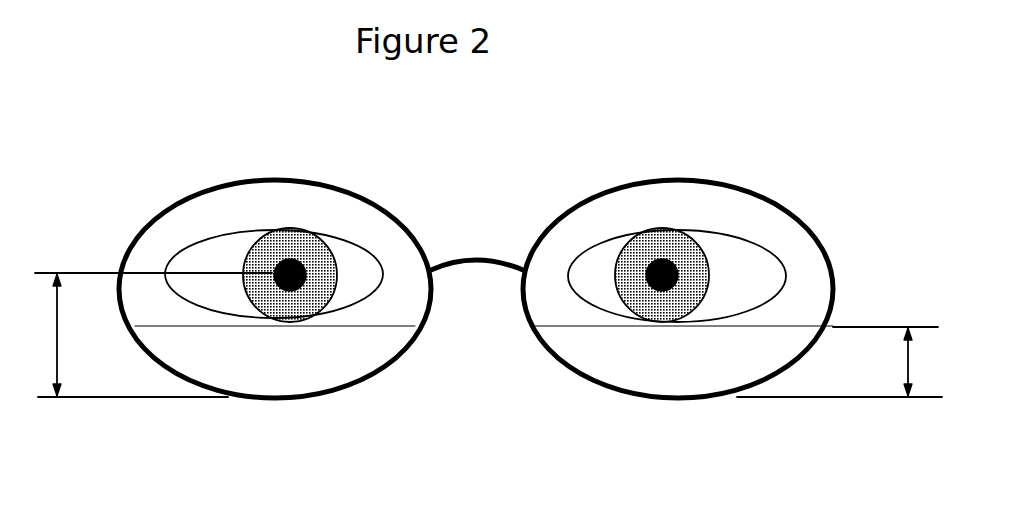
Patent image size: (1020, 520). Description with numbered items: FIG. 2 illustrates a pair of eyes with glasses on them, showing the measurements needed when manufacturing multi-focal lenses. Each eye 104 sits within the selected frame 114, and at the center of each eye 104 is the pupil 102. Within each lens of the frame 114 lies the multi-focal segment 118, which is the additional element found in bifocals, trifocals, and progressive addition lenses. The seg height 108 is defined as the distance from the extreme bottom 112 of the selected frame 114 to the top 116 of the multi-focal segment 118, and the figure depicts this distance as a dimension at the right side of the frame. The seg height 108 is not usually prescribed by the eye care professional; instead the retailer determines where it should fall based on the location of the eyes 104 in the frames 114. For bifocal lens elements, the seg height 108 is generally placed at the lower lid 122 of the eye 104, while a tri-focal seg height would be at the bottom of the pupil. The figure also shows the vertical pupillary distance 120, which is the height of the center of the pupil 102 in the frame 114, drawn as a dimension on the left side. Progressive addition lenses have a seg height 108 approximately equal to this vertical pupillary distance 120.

The pupil 102 is at (300, 262).
The eye 104 is at (373, 252).
The seg height 108 is at (908, 368).
The extreme bottom of the frame 112 is at (680, 390).
The frame 114 is at (747, 182).
The top of the multi-focal segment 116 is at (397, 325).
The multi-focal segment 118 is at (290, 362).
The vertical pupillary distance 120 is at (57, 363).
The lower lid 122 is at (287, 318).